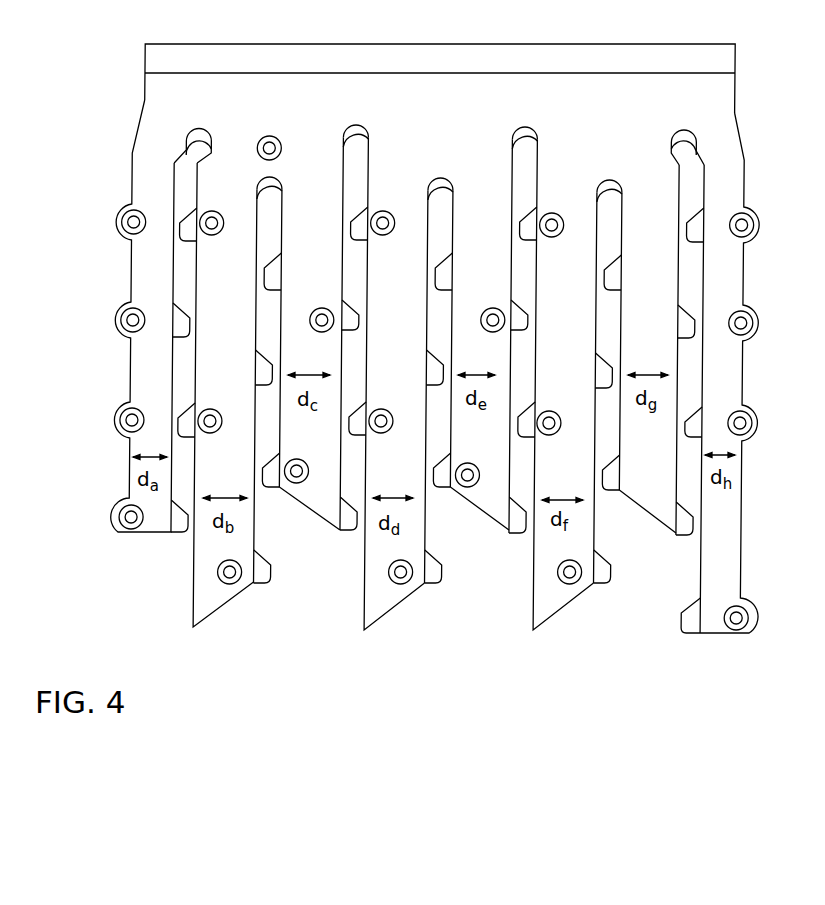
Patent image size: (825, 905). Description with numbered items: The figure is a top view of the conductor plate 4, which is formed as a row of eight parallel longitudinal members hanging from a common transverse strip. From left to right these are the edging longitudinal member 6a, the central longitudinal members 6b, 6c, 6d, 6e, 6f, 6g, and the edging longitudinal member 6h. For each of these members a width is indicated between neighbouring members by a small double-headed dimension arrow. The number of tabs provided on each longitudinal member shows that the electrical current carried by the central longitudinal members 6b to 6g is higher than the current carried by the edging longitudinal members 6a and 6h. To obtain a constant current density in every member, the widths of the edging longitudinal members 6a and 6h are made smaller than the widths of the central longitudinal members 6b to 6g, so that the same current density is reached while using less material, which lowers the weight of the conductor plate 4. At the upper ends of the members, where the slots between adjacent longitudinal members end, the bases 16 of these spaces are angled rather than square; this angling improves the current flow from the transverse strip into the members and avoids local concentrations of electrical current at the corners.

The conductor plate 4 is at (748, 125).
The base of the space between the longitudinal members 16 is at (189, 149).
The edging longitudinal member 6a is at (146, 537).
The central longitudinal member 6b is at (231, 603).
The central longitudinal member 6c is at (303, 512).
The central longitudinal member 6d is at (396, 598).
The central longitudinal member 6e is at (471, 512).
The central longitudinal member 6f is at (565, 598).
The central longitudinal member 6g is at (640, 508).
The edging longitudinal member 6h is at (733, 635).